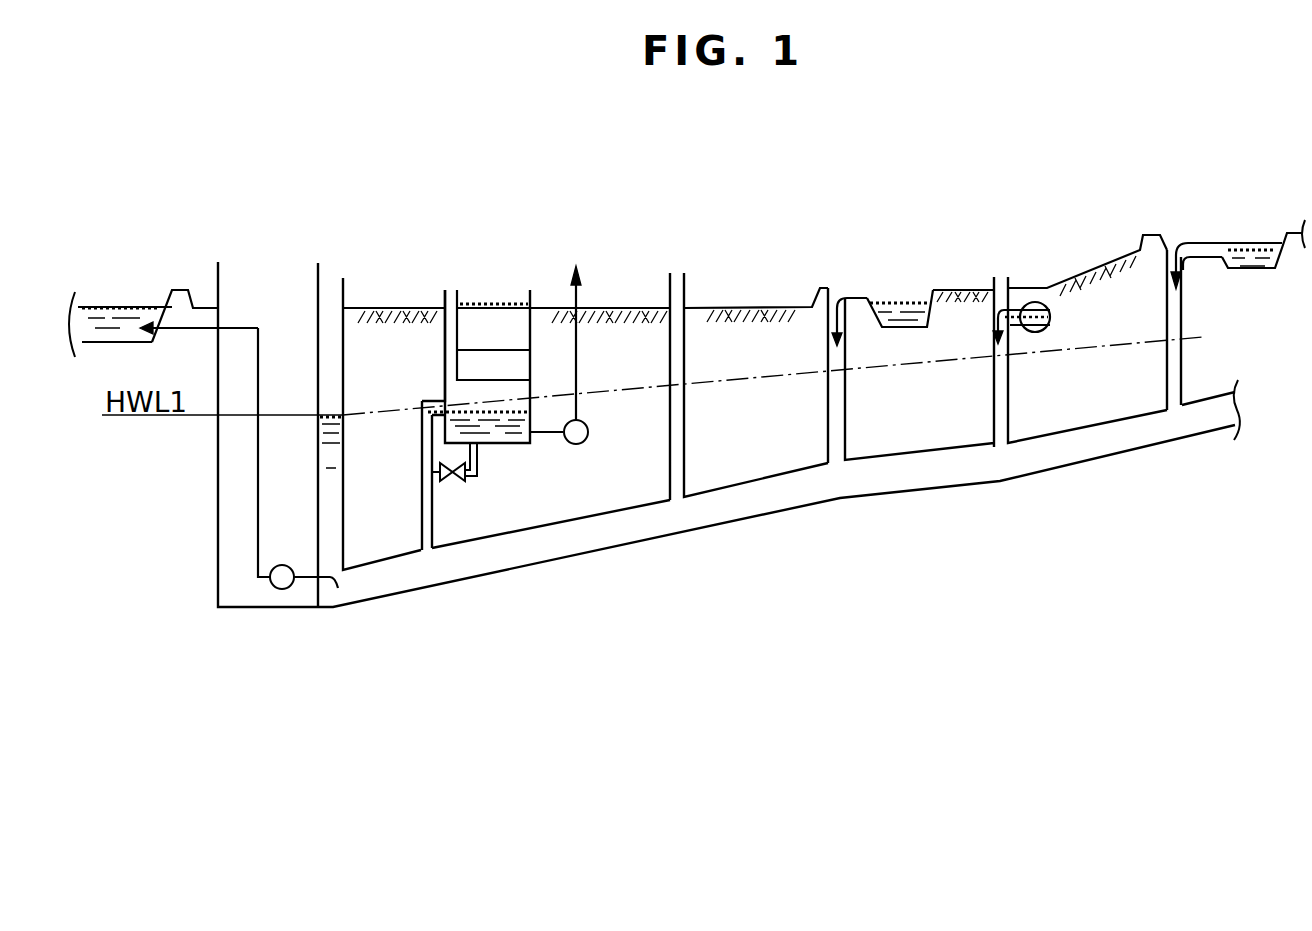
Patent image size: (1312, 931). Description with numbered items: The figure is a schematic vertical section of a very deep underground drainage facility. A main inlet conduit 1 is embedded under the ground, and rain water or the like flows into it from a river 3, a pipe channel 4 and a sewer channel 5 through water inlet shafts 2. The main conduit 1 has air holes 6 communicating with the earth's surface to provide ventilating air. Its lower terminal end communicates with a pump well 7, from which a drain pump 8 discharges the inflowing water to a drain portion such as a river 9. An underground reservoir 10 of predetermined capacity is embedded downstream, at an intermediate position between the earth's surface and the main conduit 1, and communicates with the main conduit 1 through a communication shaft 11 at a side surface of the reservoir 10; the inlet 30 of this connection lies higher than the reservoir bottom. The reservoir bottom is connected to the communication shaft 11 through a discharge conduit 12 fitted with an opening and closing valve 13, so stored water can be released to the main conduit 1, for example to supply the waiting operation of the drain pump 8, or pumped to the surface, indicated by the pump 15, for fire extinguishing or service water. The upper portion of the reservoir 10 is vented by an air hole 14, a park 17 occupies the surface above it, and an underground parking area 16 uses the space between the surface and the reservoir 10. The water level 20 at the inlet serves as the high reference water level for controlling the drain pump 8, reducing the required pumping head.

The main inlet conduit 1 is at (727, 512).
The water inlet shafts 2 is at (842, 408).
The river 3 is at (1253, 248).
The pipe channel 4 is at (1045, 288).
The sewer channel 5 is at (903, 298).
The air hole 6 is at (677, 360).
The pump well 7 is at (335, 520).
The drain pump 8 is at (282, 565).
The river 9 is at (121, 302).
The underground reservoir 10 is at (520, 447).
The communication shaft 11 is at (420, 445).
The discharge conduit 12 is at (478, 465).
The opening and closing valve 13 is at (455, 482).
The air hole 14 is at (448, 343).
The pump 15 is at (588, 435).
The underground parking area 16 is at (510, 358).
The park 17 is at (477, 305).
The water level line 20 is at (792, 375).
The inlet 30 is at (424, 401).